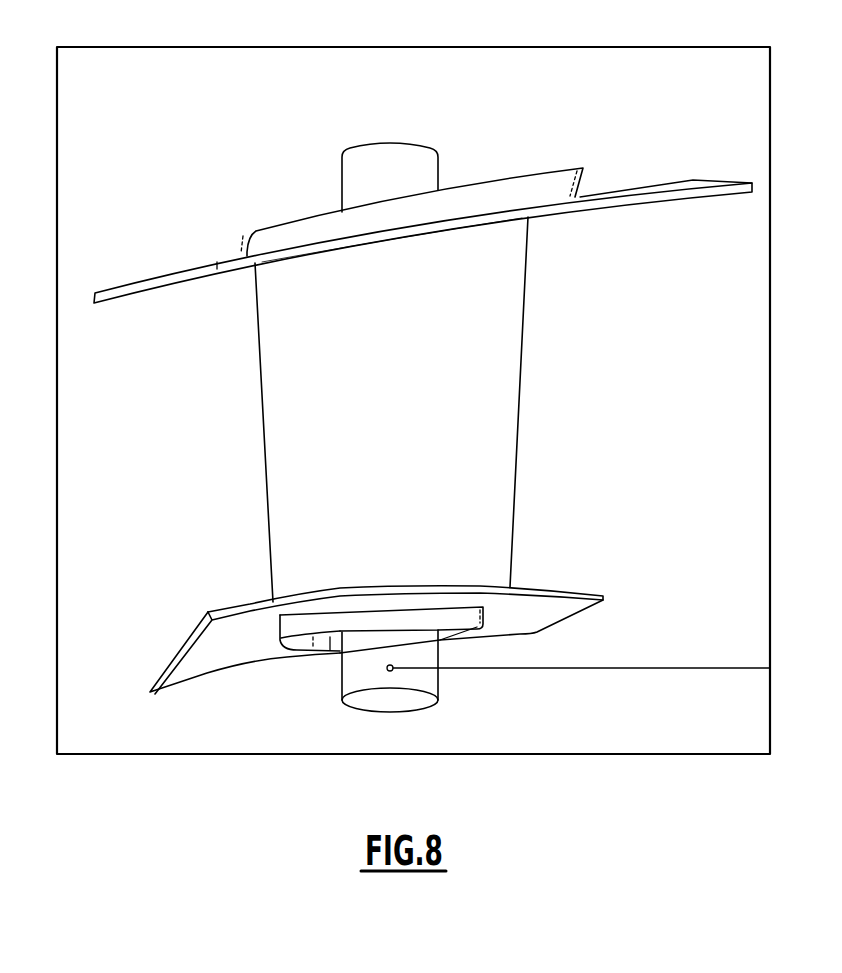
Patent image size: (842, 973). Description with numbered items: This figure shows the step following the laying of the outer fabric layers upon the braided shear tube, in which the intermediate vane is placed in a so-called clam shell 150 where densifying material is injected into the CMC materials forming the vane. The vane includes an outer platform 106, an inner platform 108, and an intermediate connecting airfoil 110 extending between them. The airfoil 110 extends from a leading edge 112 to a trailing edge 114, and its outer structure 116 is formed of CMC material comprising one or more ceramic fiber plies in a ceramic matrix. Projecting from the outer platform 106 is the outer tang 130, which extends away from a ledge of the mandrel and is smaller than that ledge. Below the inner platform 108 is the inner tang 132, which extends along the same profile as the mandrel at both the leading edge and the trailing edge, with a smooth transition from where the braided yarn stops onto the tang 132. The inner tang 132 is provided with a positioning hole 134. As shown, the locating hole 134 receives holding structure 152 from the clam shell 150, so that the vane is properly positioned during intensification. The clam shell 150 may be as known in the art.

The clam shell 150 is at (118, 84).
The outer platform 106 is at (148, 283).
The inner platform 108 is at (586, 594).
The airfoil 110 is at (389, 409).
The leading edge 112 is at (262, 437).
The trailing edge 114 is at (518, 428).
The outer structure 116 is at (461, 250).
The outer tang 130 is at (412, 157).
The inner tang 132 is at (353, 664).
The positioning hole 134 is at (389, 671).
The holding structure 152 is at (603, 668).